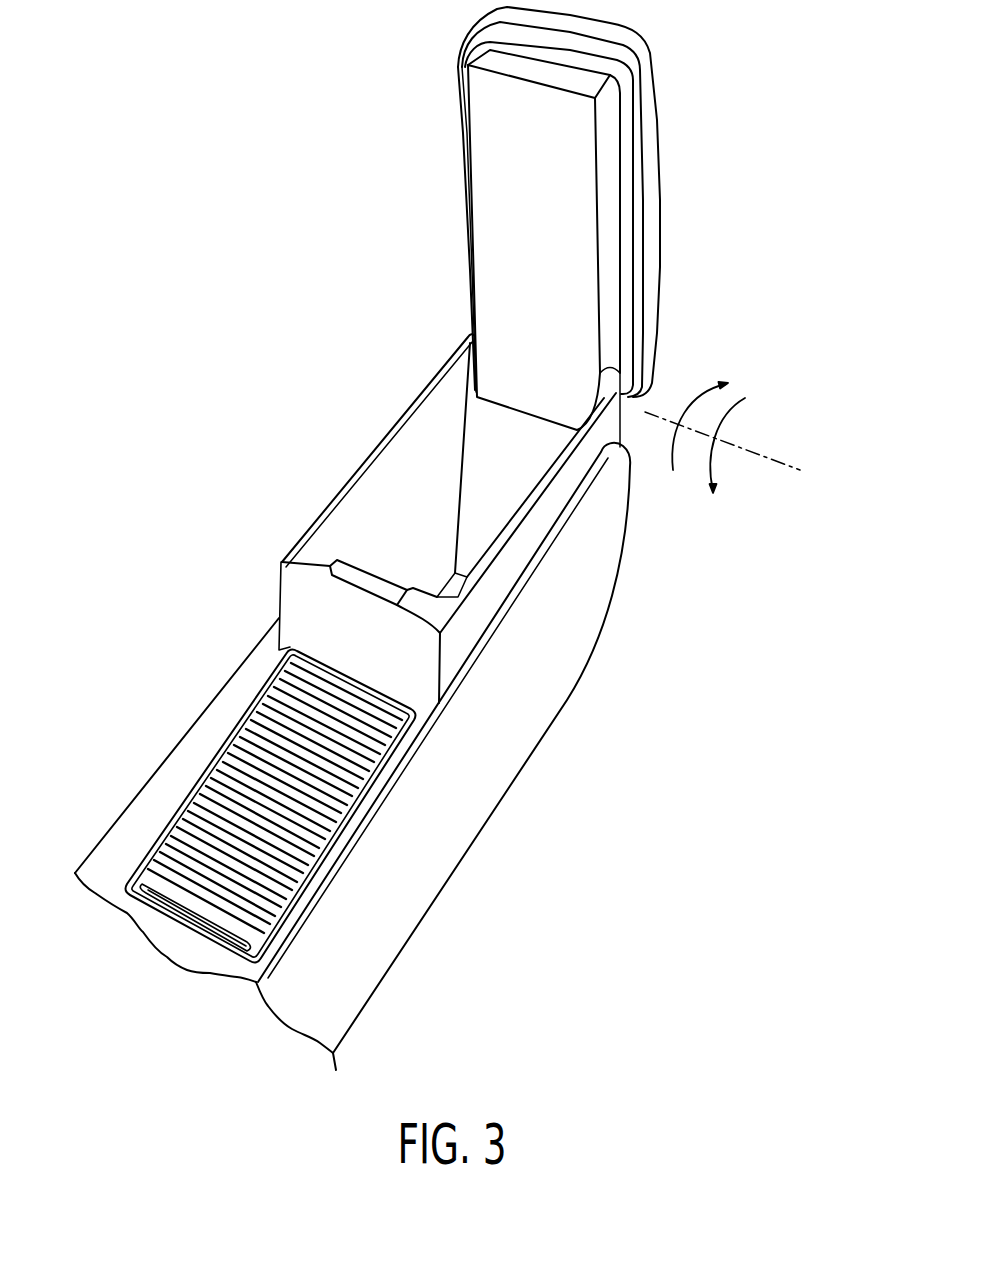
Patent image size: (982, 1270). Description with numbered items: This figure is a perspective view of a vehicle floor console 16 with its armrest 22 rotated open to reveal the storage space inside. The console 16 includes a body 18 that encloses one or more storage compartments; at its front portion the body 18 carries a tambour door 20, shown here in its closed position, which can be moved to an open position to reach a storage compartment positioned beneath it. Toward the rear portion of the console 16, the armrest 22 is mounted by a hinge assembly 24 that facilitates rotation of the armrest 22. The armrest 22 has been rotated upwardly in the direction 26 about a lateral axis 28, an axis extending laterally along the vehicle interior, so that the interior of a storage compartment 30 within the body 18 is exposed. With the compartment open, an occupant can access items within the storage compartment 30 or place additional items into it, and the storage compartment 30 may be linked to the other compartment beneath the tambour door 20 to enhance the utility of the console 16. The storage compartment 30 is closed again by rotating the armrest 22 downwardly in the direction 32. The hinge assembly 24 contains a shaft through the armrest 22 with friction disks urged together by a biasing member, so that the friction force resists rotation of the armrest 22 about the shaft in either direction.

The floor console 16 is at (437, 538).
The body 18 is at (547, 672).
The tambour door 20 is at (207, 817).
The armrest 22 is at (648, 140).
The hinge assembly 24 is at (449, 498).
The direction 26 is at (695, 398).
The lateral axis 28 is at (773, 460).
The storage compartment 30 is at (408, 450).
The direction 32 is at (703, 463).